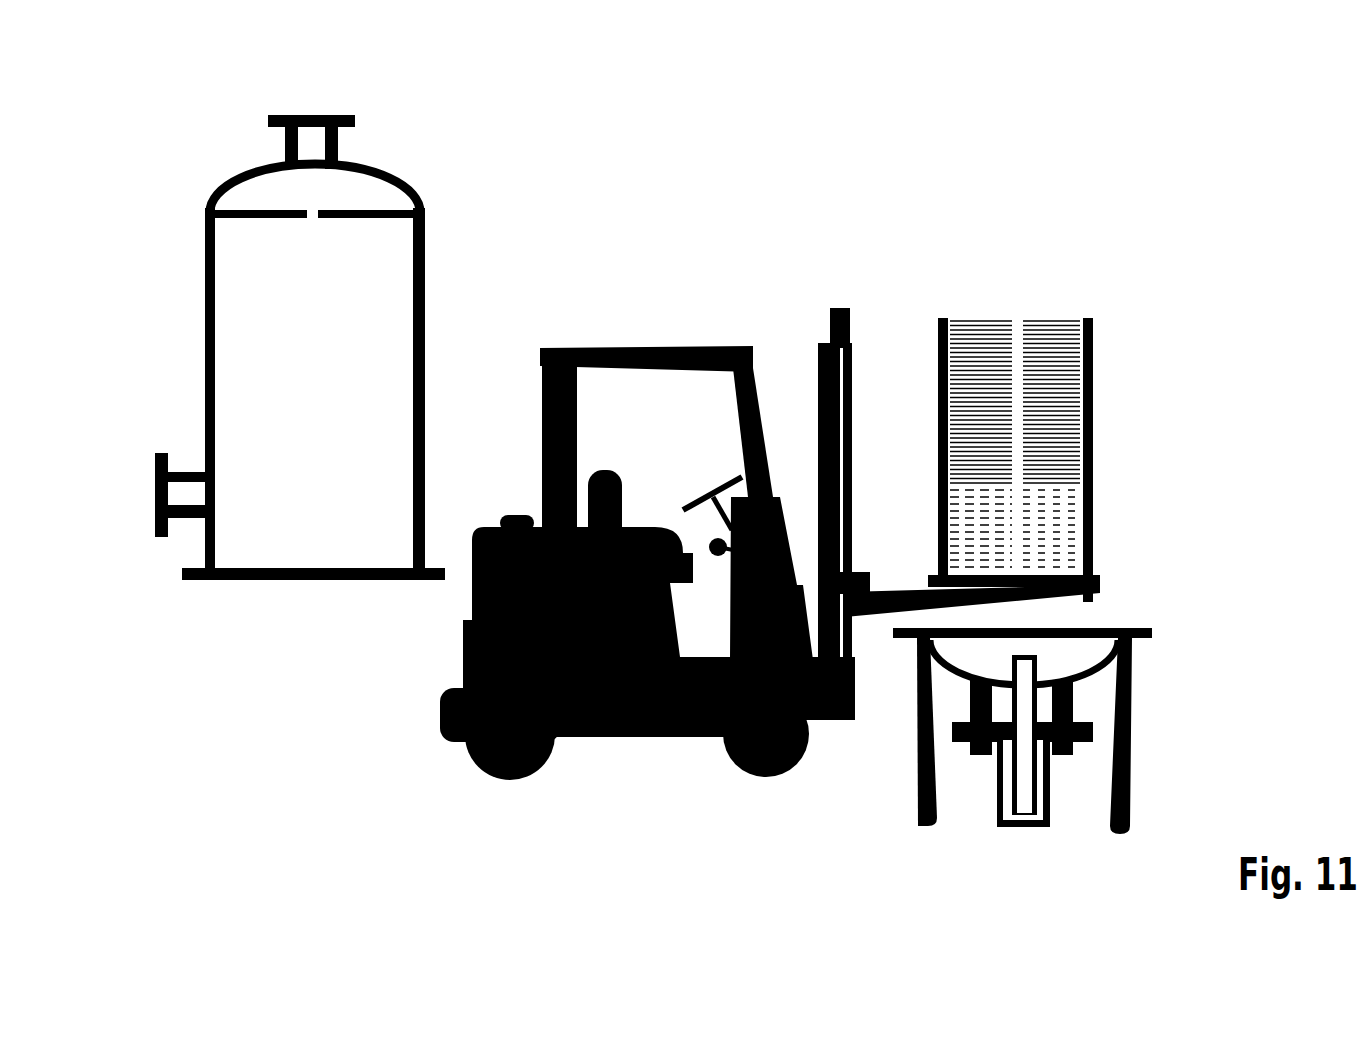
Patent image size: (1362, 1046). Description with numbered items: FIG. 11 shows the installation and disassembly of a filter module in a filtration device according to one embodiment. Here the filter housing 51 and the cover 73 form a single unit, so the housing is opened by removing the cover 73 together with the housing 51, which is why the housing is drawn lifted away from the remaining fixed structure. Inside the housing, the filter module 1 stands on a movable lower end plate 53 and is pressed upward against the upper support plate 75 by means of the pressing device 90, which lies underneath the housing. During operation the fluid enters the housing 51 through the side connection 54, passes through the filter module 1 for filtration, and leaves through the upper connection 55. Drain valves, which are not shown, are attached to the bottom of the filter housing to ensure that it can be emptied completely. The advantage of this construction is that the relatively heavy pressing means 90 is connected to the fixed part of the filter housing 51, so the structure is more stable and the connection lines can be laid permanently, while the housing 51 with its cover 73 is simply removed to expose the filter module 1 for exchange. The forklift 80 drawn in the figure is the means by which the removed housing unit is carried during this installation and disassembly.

The filter module 1 is at (1030, 410).
The filter housing 51 is at (425, 270).
The movable lower end plate 53 is at (1093, 600).
The side connection 54 is at (175, 472).
The upper connection 55 is at (318, 115).
The cover 73 is at (395, 178).
The upper support plate 75 is at (388, 171).
The forklift 80 is at (468, 652).
The pressing device 90 is at (1050, 798).